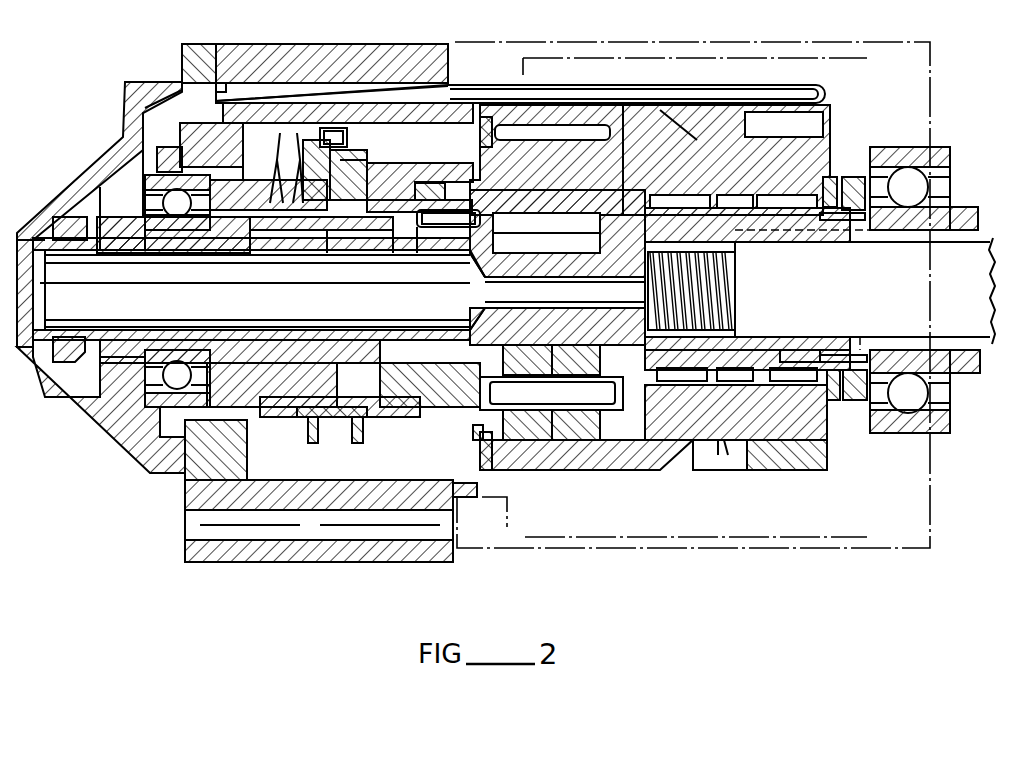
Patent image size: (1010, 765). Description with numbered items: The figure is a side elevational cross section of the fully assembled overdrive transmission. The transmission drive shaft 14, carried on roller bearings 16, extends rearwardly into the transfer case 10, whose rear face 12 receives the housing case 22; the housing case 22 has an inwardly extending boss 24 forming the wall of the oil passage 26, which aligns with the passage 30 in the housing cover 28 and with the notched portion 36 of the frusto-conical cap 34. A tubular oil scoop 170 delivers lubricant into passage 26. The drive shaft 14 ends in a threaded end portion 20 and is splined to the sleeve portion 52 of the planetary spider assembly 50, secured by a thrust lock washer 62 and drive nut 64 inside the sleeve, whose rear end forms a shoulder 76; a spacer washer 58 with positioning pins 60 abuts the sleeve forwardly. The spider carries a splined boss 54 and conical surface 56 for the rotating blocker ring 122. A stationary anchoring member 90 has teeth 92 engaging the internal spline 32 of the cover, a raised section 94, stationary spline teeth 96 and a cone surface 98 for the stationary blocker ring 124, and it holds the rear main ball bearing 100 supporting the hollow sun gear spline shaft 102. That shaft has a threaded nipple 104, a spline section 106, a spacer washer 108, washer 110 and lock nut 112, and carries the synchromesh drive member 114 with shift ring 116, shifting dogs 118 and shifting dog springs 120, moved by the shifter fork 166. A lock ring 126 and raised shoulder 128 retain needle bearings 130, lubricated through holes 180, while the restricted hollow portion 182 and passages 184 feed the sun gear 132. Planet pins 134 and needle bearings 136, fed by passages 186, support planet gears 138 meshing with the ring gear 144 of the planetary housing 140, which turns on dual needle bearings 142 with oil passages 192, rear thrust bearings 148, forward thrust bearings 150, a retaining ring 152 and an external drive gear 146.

The transfer case 10 is at (603, 39).
The rear face 12 is at (449, 68).
The transmission drive shaft 14 is at (892, 296).
The roller bearings 16 is at (940, 147).
The threaded end portion 20 is at (713, 283).
The housing case 22 is at (307, 44).
The boss 24 is at (373, 123).
The passage 26 is at (308, 110).
The housing cover 28 is at (197, 44).
The passage 30 is at (215, 108).
The internal spline 32 is at (242, 160).
The cap 34 is at (55, 383).
The notched portion 36 is at (128, 100).
The planetary spider assembly 50 is at (478, 140).
The sleeve portion 52 is at (788, 360).
The splined boss 54 is at (452, 198).
The conical surface 56 is at (430, 185).
The spacer washer 58 is at (855, 177).
The positioning pins 60 is at (845, 177).
The thrust lock washer 62 is at (723, 248).
The drive nut 64 is at (713, 313).
The shoulder 76 is at (600, 380).
The stationary anchoring member 90 is at (248, 172).
The teeth 92 is at (250, 430).
The raised section 94 is at (170, 147).
The spline teeth 96 is at (228, 240).
The cone surface 98 is at (280, 155).
The rear main ball bearing 100 is at (205, 250).
The overdrive sun gear spline shaft 102 is at (290, 300).
The threaded nipple 104 is at (75, 338).
The spline section 106 is at (168, 340).
The spacer washer 108 is at (160, 240).
The washer 110 is at (125, 240).
The spline shaft lock nut 112 is at (78, 245).
The synchromesh drive member 114 is at (327, 258).
The shift ring 116 is at (356, 165).
The shifting dogs 118 is at (395, 180).
The shifting dog springs 120 is at (345, 425).
The rotating blocker ring 122 is at (420, 163).
The stationary blocker ring 124 is at (300, 155).
The lock ring 126 is at (372, 258).
The raised shoulder 128 is at (494, 223).
The needle bearings 130 is at (412, 258).
The sun gear 132 is at (548, 250).
The planet pins 134 is at (476, 441).
The needle bearings 136 is at (522, 390).
The planet gears 138 is at (585, 470).
The planetary housing 140 is at (729, 137).
The dual needle bearings 142 is at (730, 458).
The ring gear 144 is at (605, 125).
The external drive gear 146 is at (815, 118).
The rear thrust needle bearings 148 is at (700, 135).
The thrust needle bearings 150 is at (830, 177).
The retaining ring 152 is at (477, 470).
The shifter fork 166 is at (333, 137).
The tubular oil scoop 170 is at (822, 88).
The radially extending holes 180 is at (447, 232).
The restricted hollow portion 182 is at (497, 300).
The radially extending lubricant passages 184 is at (560, 300).
The radial oil passages 186 is at (570, 372).
The radially extending oil passages 192 is at (772, 242).